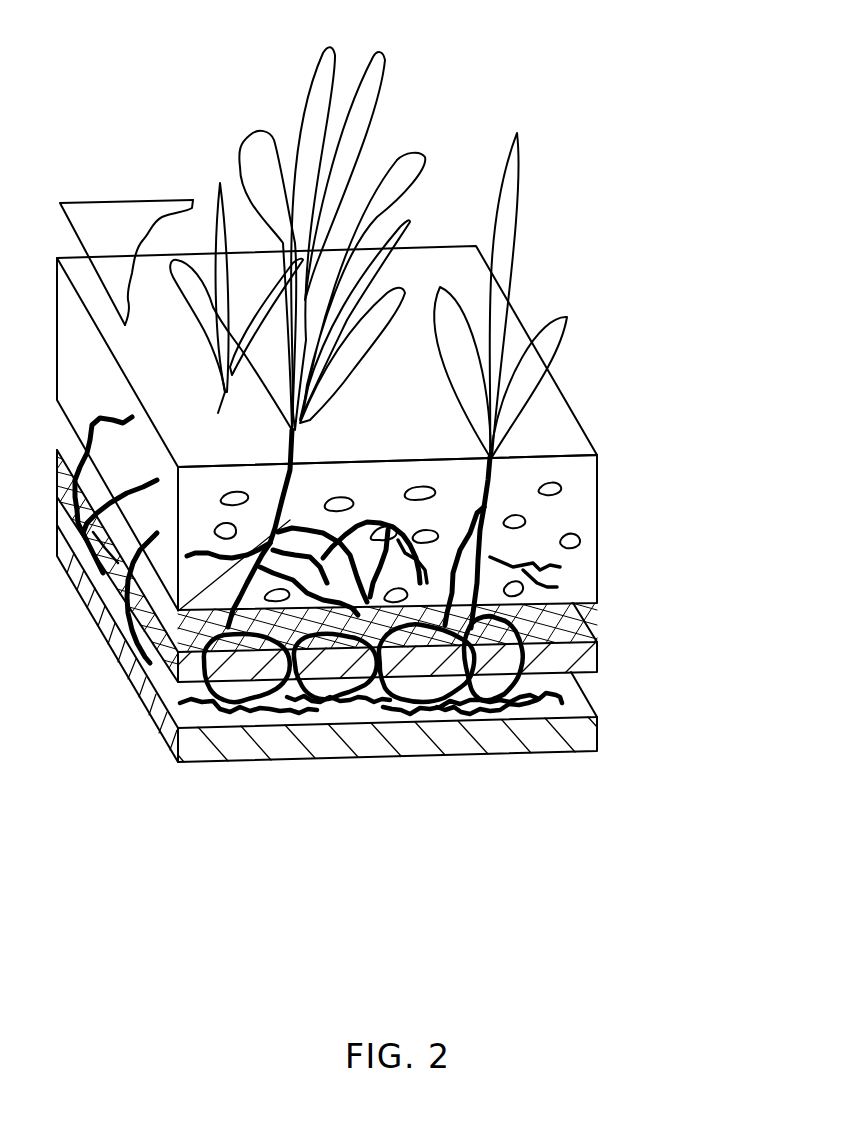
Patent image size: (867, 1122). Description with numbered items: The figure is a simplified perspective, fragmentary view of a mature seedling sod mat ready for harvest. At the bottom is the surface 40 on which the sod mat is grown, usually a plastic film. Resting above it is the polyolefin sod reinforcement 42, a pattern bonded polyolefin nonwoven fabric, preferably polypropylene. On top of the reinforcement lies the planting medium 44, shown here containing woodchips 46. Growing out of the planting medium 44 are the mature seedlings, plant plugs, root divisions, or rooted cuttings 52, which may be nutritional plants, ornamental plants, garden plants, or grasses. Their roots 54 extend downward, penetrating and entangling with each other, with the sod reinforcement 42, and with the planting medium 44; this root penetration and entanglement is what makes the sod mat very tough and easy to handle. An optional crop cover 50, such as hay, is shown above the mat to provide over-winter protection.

The surface 40 is at (398, 758).
The polyolefin sod reinforcement 42 is at (597, 660).
The planting medium 44 is at (597, 563).
The woodchips 46 is at (577, 533).
The crop cover 50 is at (108, 200).
The mature seedlings, plant plugs, root divisions, or rooted cuttings 52 is at (517, 133).
The plant roots 54 is at (142, 655).